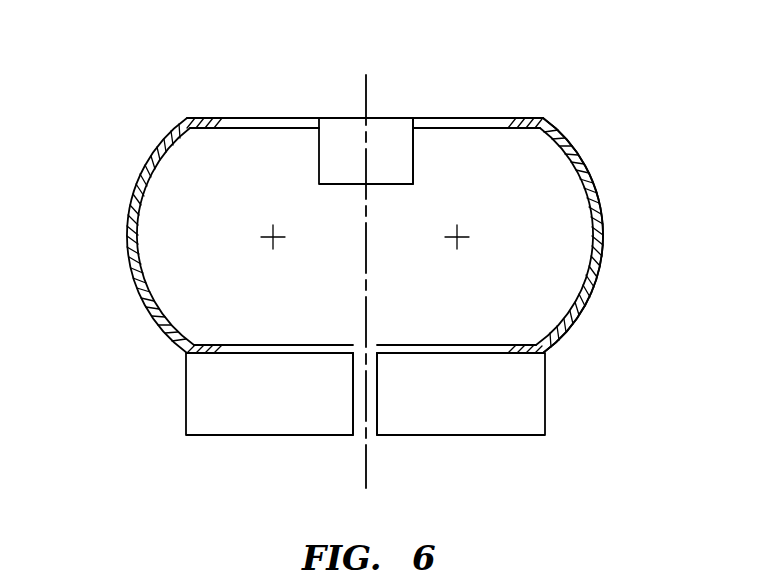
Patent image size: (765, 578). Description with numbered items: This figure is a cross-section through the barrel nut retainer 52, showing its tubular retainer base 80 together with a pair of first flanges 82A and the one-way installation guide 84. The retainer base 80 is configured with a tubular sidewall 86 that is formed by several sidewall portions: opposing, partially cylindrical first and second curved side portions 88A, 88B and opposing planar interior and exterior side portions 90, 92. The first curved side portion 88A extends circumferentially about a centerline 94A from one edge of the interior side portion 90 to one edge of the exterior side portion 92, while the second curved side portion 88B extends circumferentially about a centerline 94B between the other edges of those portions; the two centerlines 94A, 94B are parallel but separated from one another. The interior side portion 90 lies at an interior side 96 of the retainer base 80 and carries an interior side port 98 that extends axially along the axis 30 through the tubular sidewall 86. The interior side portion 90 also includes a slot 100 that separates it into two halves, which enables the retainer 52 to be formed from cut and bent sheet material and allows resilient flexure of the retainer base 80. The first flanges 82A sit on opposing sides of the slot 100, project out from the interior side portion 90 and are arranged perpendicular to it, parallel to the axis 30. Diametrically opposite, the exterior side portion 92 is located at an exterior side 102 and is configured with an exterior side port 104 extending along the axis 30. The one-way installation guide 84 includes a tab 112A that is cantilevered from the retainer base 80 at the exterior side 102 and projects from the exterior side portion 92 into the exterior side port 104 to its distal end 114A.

The barrel nut retainer 52 is at (605, 84).
The retainer base 80 is at (598, 156).
The tubular sidewall 86 is at (573, 235).
The first curved side portion 88A is at (129, 268).
The second curved side portion 88B is at (601, 263).
The exterior side 102 is at (209, 110).
The exterior side port 104 is at (265, 112).
The exterior side portion 92 is at (527, 118).
The distal end 114A is at (343, 118).
The tab 112A is at (423, 155).
The one-way installation guide 84 is at (412, 205).
The centerline 94A is at (272, 249).
The centerline 94B is at (462, 235).
The slot 100 is at (359, 346).
The interior side port 98 is at (296, 364).
The interior side portion 90 is at (522, 345).
The interior side 96 is at (174, 365).
The first flanges 82A is at (212, 436).
The axis 30 is at (366, 480).